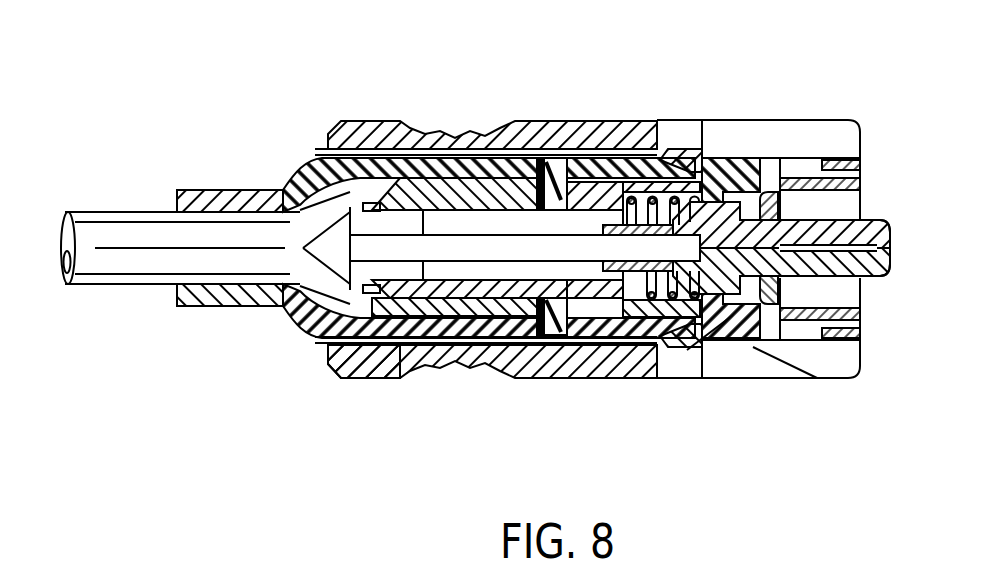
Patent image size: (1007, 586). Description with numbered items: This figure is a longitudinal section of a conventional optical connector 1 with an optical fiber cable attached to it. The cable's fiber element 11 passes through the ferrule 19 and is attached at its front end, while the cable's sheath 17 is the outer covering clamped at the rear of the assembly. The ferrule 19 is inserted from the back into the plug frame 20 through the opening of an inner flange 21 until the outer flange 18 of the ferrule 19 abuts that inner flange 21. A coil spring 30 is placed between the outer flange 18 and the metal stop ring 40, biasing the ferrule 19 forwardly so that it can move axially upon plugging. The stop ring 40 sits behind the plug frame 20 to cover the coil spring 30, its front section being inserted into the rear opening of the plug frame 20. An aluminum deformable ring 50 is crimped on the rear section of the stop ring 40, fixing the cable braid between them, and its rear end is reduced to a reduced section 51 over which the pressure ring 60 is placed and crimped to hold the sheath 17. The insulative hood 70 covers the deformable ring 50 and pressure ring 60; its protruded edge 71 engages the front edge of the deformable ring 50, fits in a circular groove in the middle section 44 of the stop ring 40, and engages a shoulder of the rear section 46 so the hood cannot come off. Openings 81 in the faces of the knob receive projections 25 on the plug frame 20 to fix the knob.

The connector 1 is at (252, 383).
The fiber element 11 is at (878, 254).
The sheath 17 is at (116, 224).
The outer flange 18 is at (703, 172).
The ferrule 19 is at (870, 219).
The plug frame 20 is at (730, 202).
The inner flange 21 is at (755, 295).
The projections 25 is at (671, 155).
The coil spring 30 is at (683, 287).
The stop ring 40 is at (599, 142).
The middle section 44 is at (563, 200).
The rear section 46 is at (503, 200).
The deformable ring 50 is at (463, 205).
The reduced section 51 is at (382, 203).
The pressure ring 60 is at (376, 346).
The insulative hood 70 is at (304, 170).
The protruded edge 71 is at (541, 198).
The openings 81 is at (750, 128).